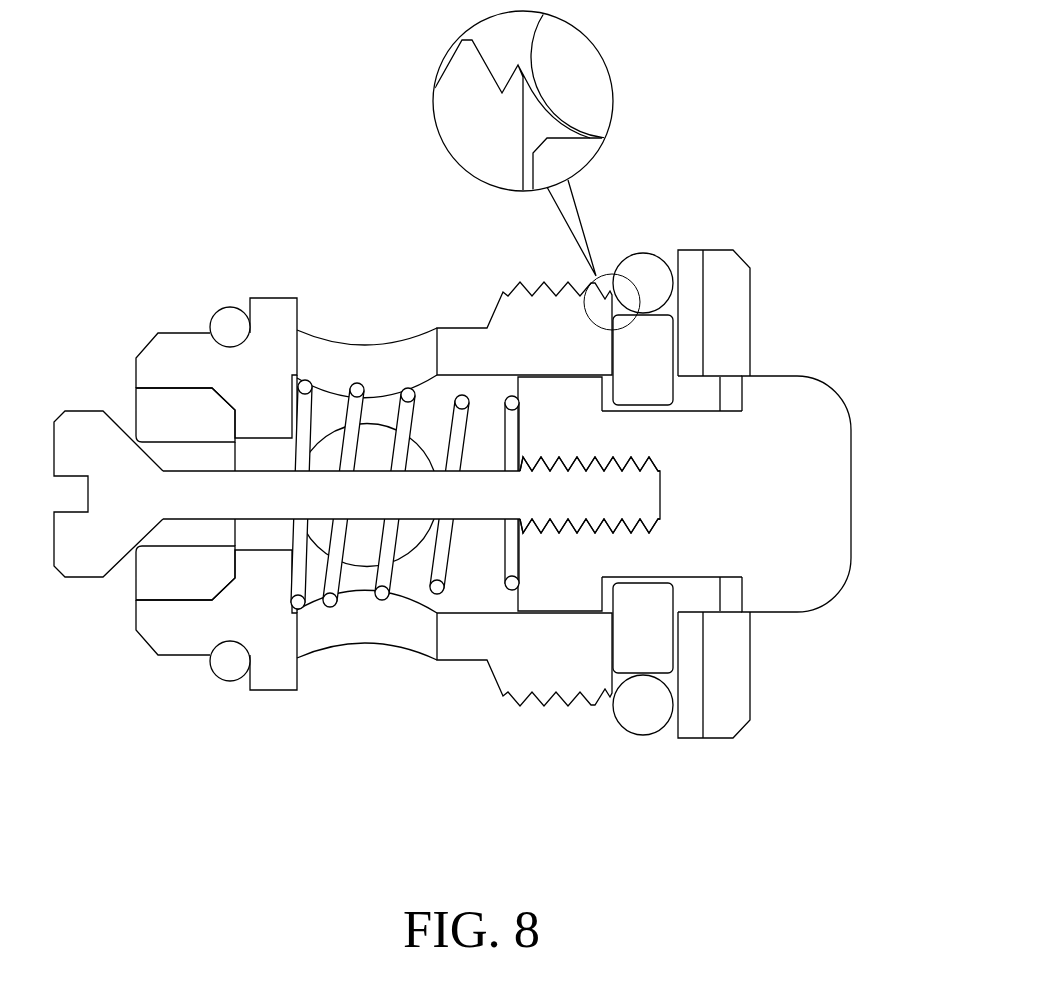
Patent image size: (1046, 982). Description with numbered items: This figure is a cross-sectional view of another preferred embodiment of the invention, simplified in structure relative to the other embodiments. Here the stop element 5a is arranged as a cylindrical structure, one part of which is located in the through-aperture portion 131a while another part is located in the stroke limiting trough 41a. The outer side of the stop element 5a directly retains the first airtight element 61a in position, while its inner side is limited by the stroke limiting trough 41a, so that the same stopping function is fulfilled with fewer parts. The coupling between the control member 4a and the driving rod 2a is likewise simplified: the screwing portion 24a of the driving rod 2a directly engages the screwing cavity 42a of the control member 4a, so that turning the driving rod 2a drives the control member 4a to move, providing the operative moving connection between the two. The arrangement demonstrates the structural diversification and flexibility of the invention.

The driving rod 2a is at (83, 577).
The control member 4a is at (517, 598).
The stop element 5a is at (673, 395).
The screwing portion 24a is at (585, 522).
The screwing cavity 42a is at (561, 737).
The stroke limiting trough 41a is at (713, 412).
The first airtight element 61a is at (643, 253).
The through-aperture portion 131a is at (523, 132).